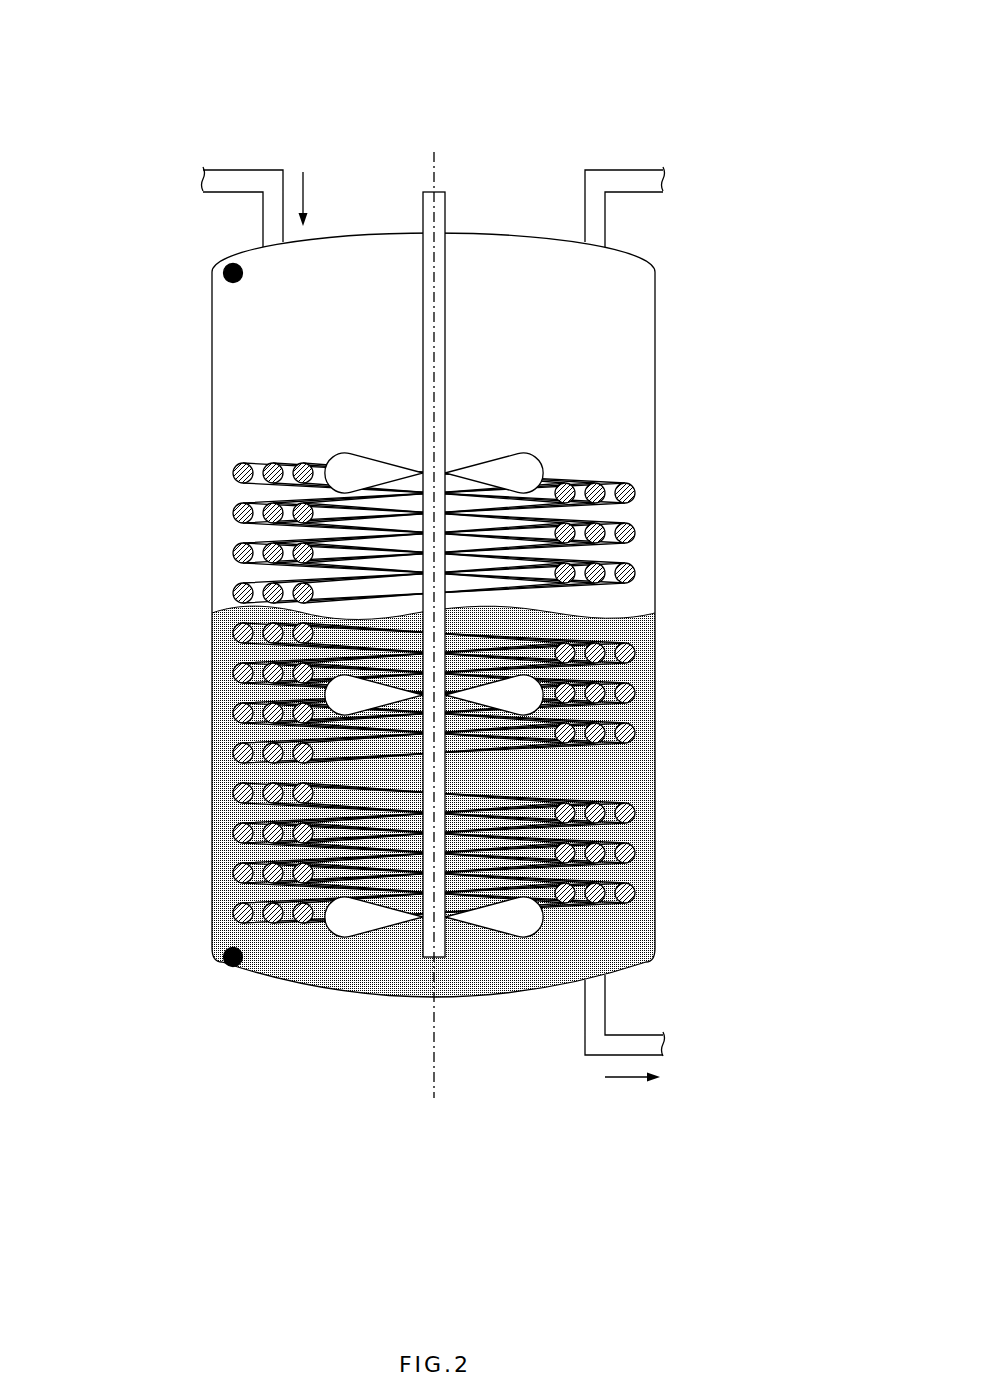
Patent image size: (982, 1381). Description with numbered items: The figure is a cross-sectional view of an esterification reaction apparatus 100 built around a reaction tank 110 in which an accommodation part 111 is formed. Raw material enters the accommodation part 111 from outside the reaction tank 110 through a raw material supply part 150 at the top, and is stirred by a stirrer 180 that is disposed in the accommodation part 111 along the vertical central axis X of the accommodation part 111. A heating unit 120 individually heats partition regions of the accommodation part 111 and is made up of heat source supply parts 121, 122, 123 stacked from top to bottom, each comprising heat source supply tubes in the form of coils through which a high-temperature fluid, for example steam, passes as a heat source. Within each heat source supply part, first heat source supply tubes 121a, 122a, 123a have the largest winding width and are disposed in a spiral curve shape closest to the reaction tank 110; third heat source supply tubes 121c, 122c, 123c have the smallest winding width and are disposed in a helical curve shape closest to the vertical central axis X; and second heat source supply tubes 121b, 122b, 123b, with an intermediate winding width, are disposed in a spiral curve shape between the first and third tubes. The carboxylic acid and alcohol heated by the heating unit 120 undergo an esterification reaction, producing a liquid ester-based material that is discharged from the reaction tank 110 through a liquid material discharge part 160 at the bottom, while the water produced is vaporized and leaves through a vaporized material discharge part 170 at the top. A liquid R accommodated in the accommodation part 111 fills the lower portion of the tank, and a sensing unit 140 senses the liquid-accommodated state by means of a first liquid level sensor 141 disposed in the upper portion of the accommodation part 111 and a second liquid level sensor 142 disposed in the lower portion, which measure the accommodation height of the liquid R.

The esterification reaction apparatus 100 is at (591, 27).
The reaction tank 110 is at (487, 615).
The accommodation part 111 is at (637, 302).
The heating unit 120 is at (145, 1020).
The heat source supply part 121 is at (123, 428).
The first heat source supply tube 121a is at (233, 473).
The second heat source supply tube 121b is at (273, 463).
The third heat source supply tube 121c is at (273, 484).
The heat source supply part 122 is at (123, 588).
The first heat source supply tube 122a is at (233, 633).
The second heat source supply tube 122b is at (273, 623).
The third heat source supply tube 122c is at (273, 644).
The heat source supply part 123 is at (123, 748).
The first heat source supply tube 123a is at (233, 793).
The second heat source supply tube 123b is at (273, 783).
The third heat source supply tube 123c is at (273, 804).
The sensing unit 140 is at (285, 1038).
The first liquid level sensor 141 is at (223, 274).
The second liquid level sensor 142 is at (223, 957).
The raw material supply part 150 is at (240, 170).
The liquid material discharge part 160 is at (586, 1033).
The vaporized material discharge part 170 is at (621, 170).
The stirrer 180 is at (434, 598).
The liquid R is at (636, 939).
The vertical central axis X is at (434, 1042).